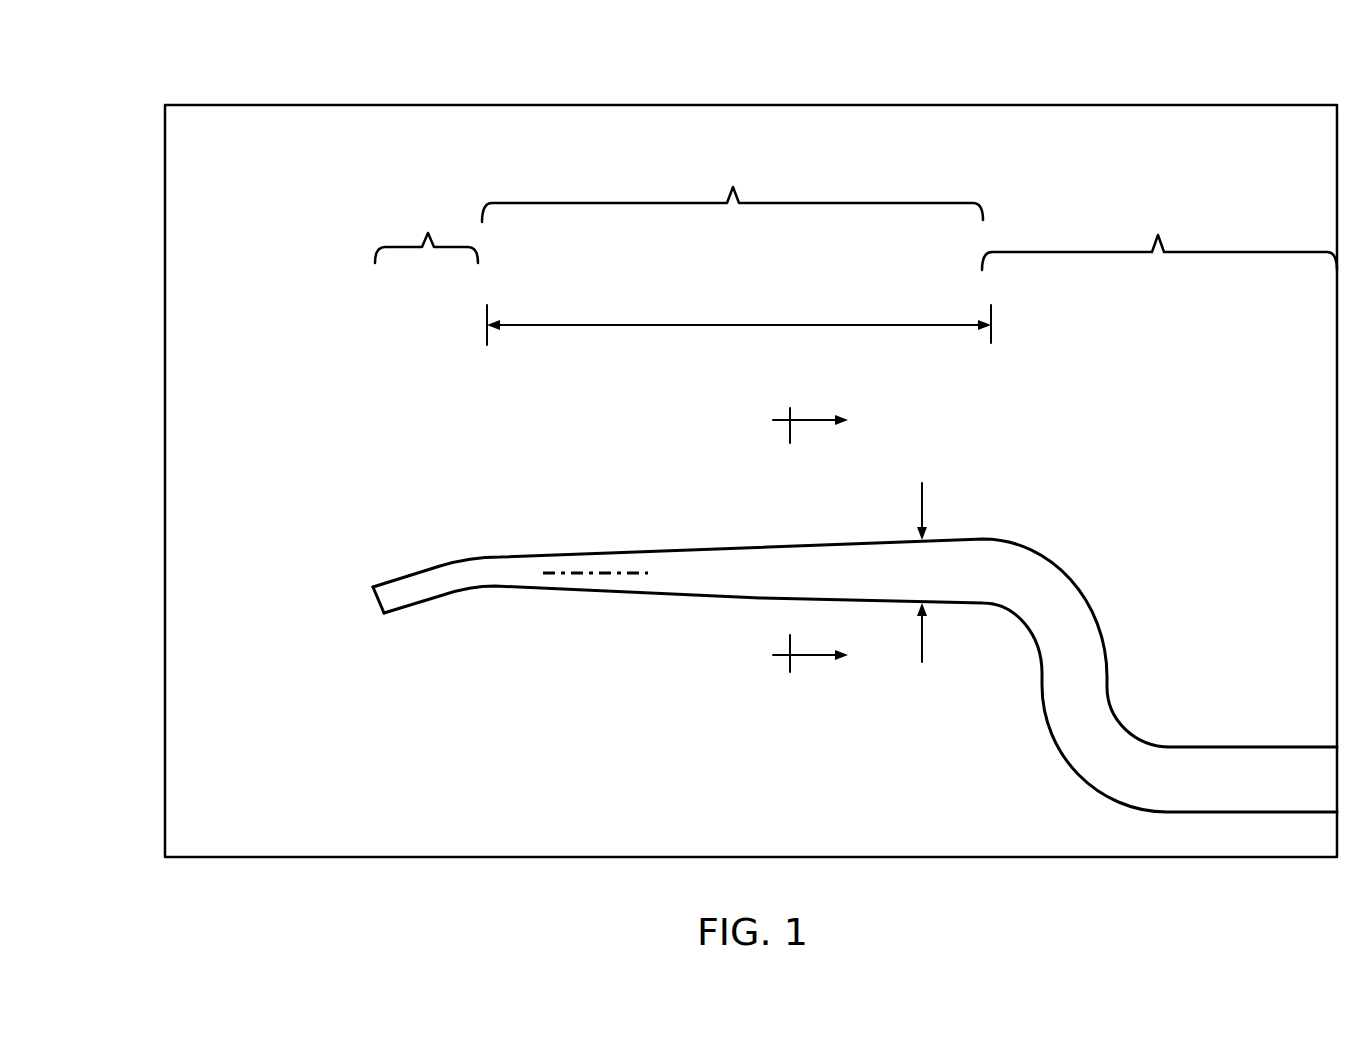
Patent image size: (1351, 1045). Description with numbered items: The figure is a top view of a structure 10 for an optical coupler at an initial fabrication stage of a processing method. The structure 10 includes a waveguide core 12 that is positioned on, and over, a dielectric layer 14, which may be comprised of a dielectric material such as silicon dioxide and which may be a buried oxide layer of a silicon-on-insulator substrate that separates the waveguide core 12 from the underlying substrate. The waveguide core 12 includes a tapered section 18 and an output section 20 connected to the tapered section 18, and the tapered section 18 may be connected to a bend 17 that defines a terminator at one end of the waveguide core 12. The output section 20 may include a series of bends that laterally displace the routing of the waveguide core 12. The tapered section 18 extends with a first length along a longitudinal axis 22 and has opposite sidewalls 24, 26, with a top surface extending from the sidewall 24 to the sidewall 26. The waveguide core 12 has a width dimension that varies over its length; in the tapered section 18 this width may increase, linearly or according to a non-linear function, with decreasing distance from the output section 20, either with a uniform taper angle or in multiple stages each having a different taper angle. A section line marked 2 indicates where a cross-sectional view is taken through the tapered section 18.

The structure 10 is at (152, 77).
The waveguide core 12 is at (855, 630).
The dielectric layer 14 is at (223, 801).
The bend 17 is at (426, 232).
The tapered section 18 is at (736, 248).
The output section 20 is at (1159, 237).
The longitudinal axis 22 is at (610, 570).
The sidewall 24 is at (762, 547).
The sidewall 26 is at (620, 592).
The section line 2- 2 is at (823, 540).